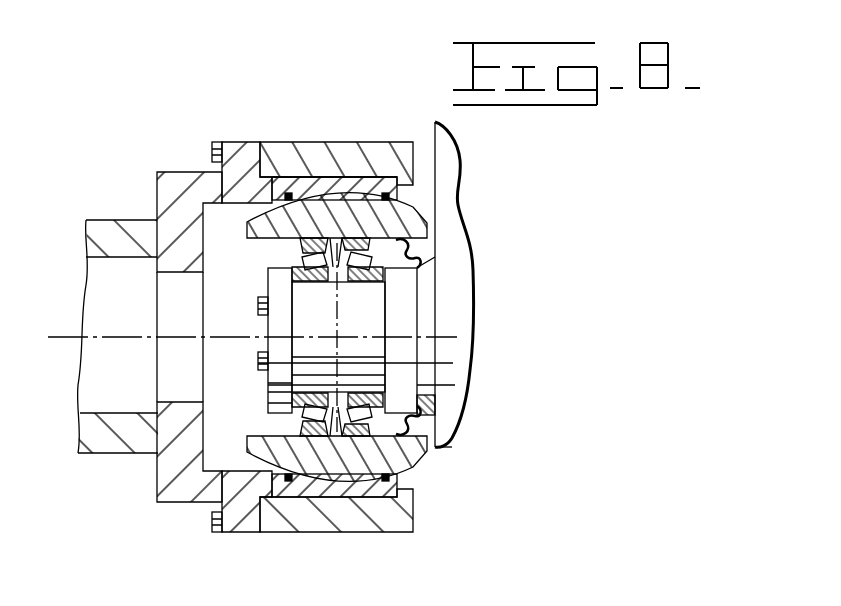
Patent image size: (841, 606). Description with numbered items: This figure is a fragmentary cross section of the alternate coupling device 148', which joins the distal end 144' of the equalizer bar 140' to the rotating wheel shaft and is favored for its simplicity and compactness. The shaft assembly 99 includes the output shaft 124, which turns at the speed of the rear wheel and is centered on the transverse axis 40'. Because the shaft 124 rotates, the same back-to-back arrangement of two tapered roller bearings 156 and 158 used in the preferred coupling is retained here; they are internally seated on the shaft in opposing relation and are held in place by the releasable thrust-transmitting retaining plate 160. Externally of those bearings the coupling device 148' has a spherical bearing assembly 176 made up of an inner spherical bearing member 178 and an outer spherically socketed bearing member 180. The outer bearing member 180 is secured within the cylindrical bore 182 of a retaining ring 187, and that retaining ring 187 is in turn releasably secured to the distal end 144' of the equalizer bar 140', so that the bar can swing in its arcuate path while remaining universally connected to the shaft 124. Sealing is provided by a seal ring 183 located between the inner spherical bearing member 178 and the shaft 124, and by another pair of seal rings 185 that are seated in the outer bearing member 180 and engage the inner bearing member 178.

The transverse axis 40' is at (252, 311).
The equalizer bar 140' is at (118, 312).
The distal end of the equalizer bar 144' is at (177, 310).
The alternate coupling device 148' is at (479, 284).
The output shaft 124 is at (468, 286).
The spherical bearing assembly 176 is at (303, 177).
The retaining ring 187 is at (333, 155).
The cylindrical bore 182 is at (358, 172).
The outer spherically socketed bearing member 180 is at (405, 178).
The inner spherical bearing member 178 is at (410, 226).
The tapered roller bearing 156 is at (303, 252).
The thrust-transmitting retaining plate 160 is at (278, 283).
The tapered roller bearing 158 is at (385, 390).
The seal ring 183 is at (423, 425).
The seal rings 185 is at (390, 466).
The shaft assembly 99 is at (450, 455).